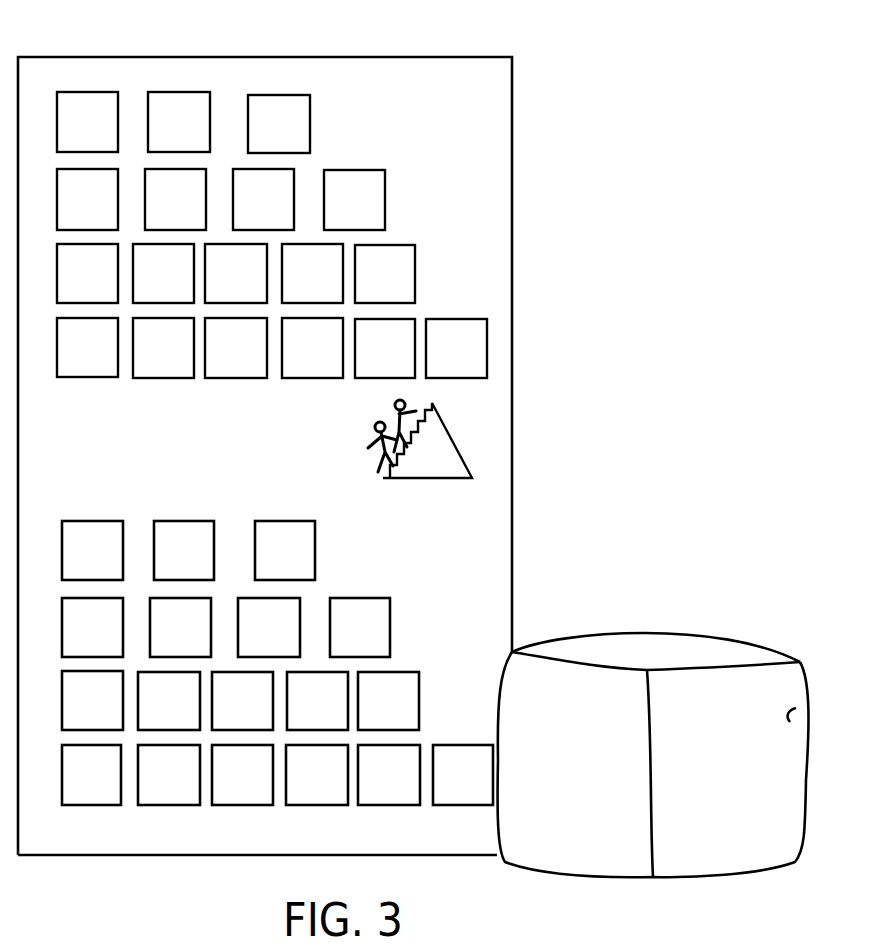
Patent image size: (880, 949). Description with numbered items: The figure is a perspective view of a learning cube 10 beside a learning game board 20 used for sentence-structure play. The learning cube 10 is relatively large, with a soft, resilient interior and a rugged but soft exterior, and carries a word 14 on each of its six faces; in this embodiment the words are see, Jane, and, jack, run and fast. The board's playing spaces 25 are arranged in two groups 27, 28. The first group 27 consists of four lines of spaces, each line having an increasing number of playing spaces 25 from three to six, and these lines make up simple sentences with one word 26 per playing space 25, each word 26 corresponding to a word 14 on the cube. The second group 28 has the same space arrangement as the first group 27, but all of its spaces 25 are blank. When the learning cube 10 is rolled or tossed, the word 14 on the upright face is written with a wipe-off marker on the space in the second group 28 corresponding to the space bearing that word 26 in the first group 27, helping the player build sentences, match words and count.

The learning cube 10 is at (652, 641).
The word 14 is at (566, 756).
The learning game board 20 is at (449, 70).
The playing space 25 is at (248, 115).
The word 26 is at (172, 379).
The first group 27 is at (497, 235).
The second group 28 is at (497, 550).